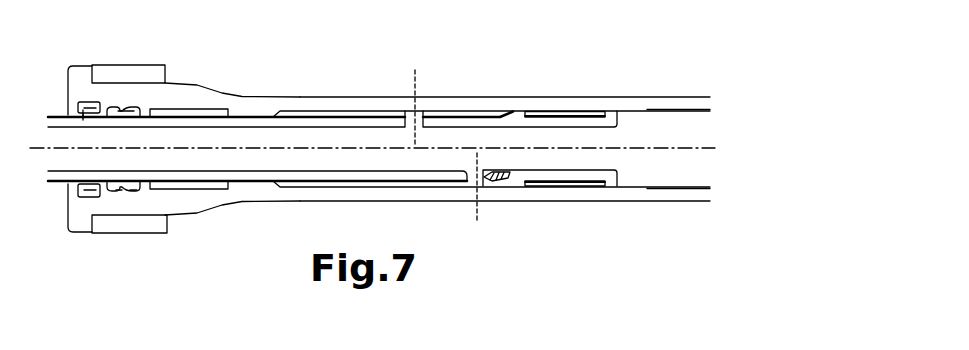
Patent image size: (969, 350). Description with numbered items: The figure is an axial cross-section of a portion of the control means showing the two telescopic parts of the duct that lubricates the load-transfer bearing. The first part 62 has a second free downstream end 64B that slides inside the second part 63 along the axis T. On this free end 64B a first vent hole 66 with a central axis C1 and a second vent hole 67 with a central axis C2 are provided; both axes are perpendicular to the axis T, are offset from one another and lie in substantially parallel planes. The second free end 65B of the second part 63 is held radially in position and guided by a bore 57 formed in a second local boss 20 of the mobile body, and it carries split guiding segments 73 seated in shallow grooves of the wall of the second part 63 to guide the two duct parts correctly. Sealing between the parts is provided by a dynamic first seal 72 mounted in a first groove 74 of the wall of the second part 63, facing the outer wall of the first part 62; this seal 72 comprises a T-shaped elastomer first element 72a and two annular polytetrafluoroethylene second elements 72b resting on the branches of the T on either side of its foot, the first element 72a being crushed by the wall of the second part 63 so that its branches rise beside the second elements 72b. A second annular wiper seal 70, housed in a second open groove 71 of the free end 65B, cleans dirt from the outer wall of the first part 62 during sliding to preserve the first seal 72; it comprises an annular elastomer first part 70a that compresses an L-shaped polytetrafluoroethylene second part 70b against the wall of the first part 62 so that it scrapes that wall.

The second local boss 20 is at (153, 78).
The bore 57 is at (158, 217).
The first part 62 is at (58, 175).
The second part 63 is at (638, 100).
The second free downstream end 64B is at (590, 184).
The second free end 65B is at (193, 98).
The first vent hole 66 is at (421, 110).
The second vent hole 67 is at (507, 183).
The second annular wiper seal 70 is at (90, 199).
The first part of the second wiper seal 70a is at (90, 112).
The second part of the second wiper seal 70b is at (83, 120).
The second open groove 71 is at (80, 101).
The first seal 72 is at (125, 192).
The first element 72a is at (121, 107).
The second elements 72b is at (117, 192).
The guiding segments 73 is at (212, 110).
The first groove 74 is at (129, 107).
The central axis of the first vent hole C1 is at (413, 86).
The central axis of the second vent hole C2 is at (477, 222).
The axis T is at (673, 148).